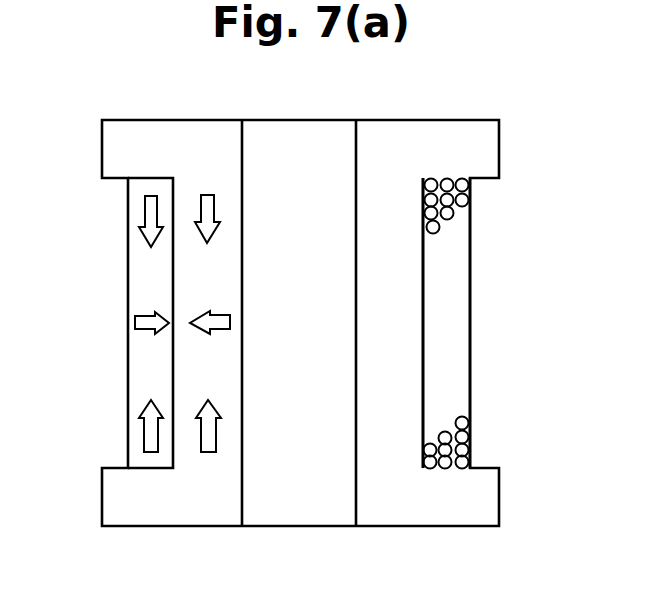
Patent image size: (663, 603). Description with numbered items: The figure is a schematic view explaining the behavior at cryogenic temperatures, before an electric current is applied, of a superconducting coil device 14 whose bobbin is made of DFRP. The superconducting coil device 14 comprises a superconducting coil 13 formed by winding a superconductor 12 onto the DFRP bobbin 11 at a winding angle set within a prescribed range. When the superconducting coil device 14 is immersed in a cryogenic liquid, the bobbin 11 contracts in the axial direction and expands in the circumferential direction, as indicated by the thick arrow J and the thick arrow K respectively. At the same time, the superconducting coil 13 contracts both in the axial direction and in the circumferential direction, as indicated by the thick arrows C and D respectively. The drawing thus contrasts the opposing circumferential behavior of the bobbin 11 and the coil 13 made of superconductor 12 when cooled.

The DFRP bobbin 11 is at (413, 120).
The superconductor 12 is at (470, 202).
The superconducting coil 13 is at (470, 298).
The superconducting coil device 14 is at (222, 527).
The thick arrow C is at (140, 217).
The thick arrow D is at (141, 331).
The thick arrow J is at (215, 211).
The thick arrow K is at (224, 331).